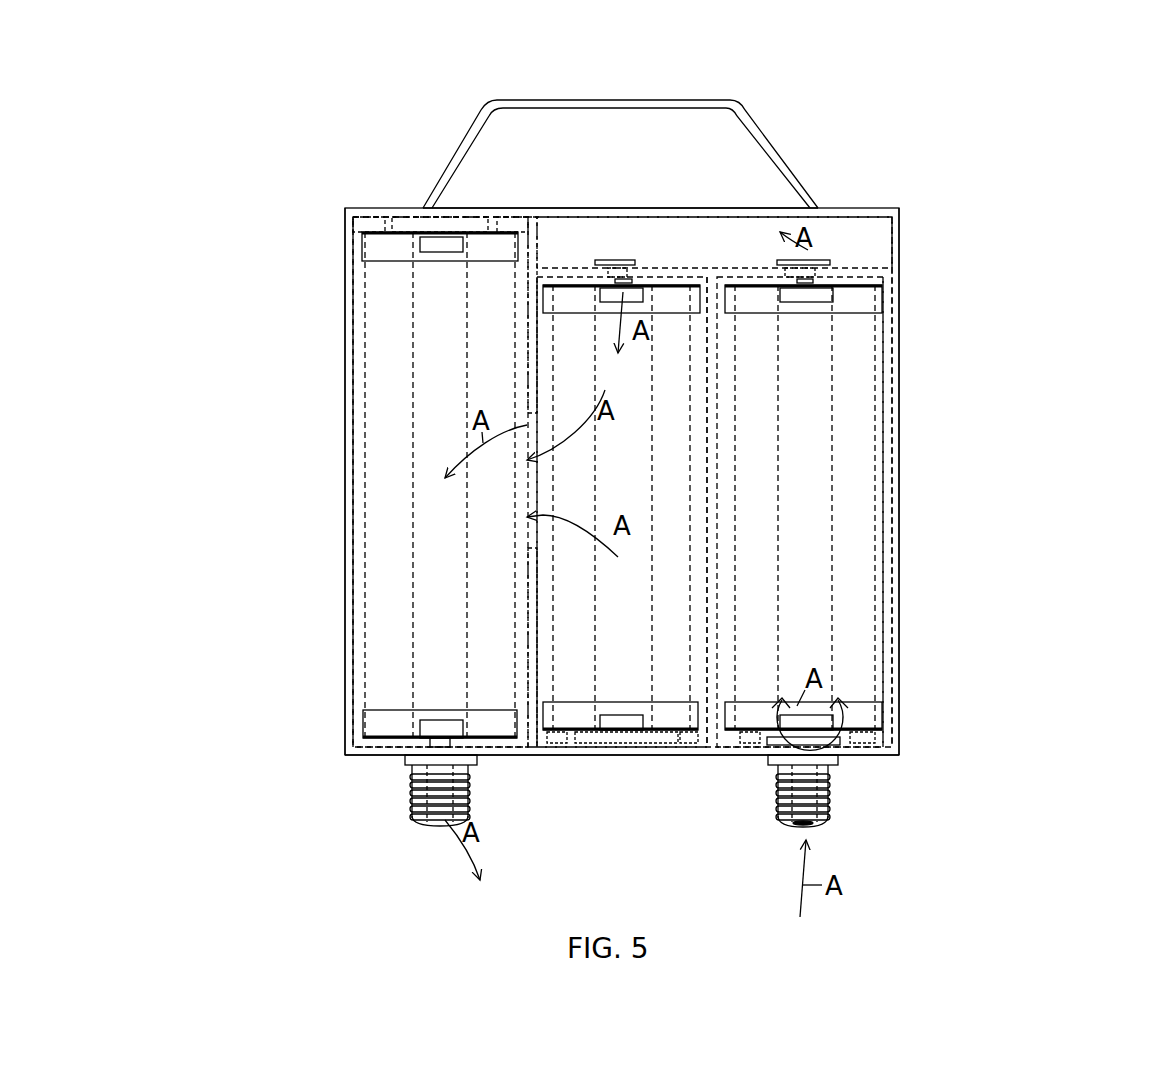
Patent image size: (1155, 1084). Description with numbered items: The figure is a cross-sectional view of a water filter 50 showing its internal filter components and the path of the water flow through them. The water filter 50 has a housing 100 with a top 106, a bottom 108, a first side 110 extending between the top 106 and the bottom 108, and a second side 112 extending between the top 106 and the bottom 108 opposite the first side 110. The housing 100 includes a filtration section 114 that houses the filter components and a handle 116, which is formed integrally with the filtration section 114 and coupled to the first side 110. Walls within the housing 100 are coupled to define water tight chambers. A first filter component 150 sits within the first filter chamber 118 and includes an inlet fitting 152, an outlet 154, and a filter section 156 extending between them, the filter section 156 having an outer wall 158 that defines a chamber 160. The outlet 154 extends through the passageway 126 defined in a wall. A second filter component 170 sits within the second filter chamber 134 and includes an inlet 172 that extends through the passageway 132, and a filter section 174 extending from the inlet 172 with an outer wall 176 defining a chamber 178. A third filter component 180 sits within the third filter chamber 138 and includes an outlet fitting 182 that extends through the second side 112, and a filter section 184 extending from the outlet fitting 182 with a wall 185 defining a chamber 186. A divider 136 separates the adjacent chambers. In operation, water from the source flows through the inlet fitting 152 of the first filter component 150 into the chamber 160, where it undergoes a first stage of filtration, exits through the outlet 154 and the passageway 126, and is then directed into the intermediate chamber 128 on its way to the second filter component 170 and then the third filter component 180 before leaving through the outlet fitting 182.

The water filter 50 is at (1067, 83).
The housing 100 is at (897, 212).
The top 106 is at (898, 458).
The bottom 108 is at (343, 653).
The first side 110 is at (852, 205).
The second side 112 is at (880, 758).
The filtration section 114 is at (903, 296).
The handle 116 is at (782, 133).
The first filter chamber 118 is at (881, 342).
The passageway 126 is at (833, 273).
The intermediate chamber 128 is at (775, 241).
The passageway 132 is at (637, 277).
The second filter chamber 134 is at (550, 737).
The divider 136 is at (532, 488).
The third filter chamber 138 is at (357, 505).
The first filter component 150 is at (846, 550).
The inlet fitting 152 is at (812, 826).
The outlet 154 is at (800, 265).
The filter section 156 is at (835, 518).
The outer wall 158 is at (873, 407).
The chamber 160 is at (843, 606).
The second filter component 170 is at (637, 672).
The inlet 172 is at (622, 258).
The filter section 174 is at (650, 472).
The outer wall 176 is at (553, 690).
The chamber 178 is at (610, 693).
The third filter component 180 is at (390, 418).
The outlet fitting 182 is at (435, 822).
The filter section 184 is at (467, 590).
The wall 185 is at (355, 617).
The chamber 186 is at (410, 670).